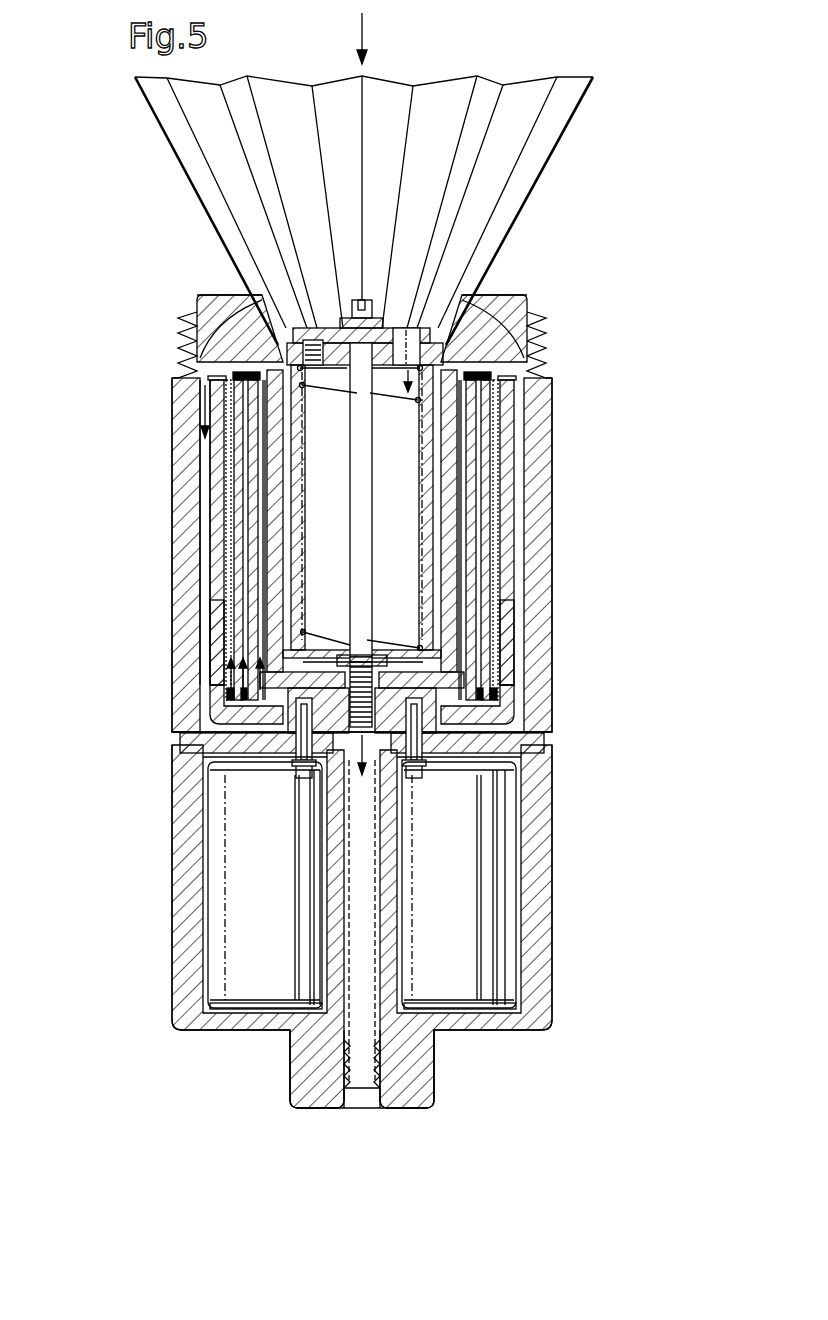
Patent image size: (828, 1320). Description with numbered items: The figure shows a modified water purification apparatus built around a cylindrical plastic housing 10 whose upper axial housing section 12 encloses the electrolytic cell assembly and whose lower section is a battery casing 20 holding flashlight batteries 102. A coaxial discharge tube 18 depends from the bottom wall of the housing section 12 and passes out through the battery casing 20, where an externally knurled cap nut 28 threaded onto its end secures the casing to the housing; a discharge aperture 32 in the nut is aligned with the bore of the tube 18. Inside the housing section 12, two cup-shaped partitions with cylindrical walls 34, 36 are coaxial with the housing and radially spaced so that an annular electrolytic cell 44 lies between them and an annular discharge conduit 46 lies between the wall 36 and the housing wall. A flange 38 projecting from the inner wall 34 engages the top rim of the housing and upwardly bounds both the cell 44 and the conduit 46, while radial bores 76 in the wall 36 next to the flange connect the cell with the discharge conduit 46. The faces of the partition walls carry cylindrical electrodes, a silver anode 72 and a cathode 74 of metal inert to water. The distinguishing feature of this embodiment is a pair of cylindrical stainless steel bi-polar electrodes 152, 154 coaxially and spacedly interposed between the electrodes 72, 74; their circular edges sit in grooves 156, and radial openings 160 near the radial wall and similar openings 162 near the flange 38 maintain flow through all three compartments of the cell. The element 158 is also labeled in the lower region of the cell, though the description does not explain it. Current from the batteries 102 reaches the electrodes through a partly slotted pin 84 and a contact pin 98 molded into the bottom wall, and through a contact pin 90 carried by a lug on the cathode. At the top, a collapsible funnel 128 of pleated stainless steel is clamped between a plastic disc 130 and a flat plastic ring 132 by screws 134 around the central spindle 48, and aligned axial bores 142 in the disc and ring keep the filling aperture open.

The housing 10 is at (142, 200).
The upper axial housing section 12 is at (536, 472).
The discharge tube 18 is at (392, 869).
The battery casing 20 is at (548, 827).
The cap nut 28 is at (436, 1076).
The discharge aperture 32 is at (372, 1100).
The radially inner partition wall 34 is at (452, 513).
The partition wall 36 is at (505, 421).
The flange 38 is at (512, 298).
The annular electrolytic cell 44 is at (462, 641).
The annular discharge conduit 46 is at (519, 527).
The spindle 48 is at (369, 516).
The silver anode 72 is at (270, 519).
The cathode 74 is at (229, 459).
The radial bores 76 is at (206, 402).
The partly slotted pin 84 is at (304, 780).
The contact pin 90 is at (402, 646).
The contact pin 98 is at (414, 780).
The flashlight batteries 102 is at (218, 901).
The collapsible funnel 128 is at (530, 186).
The plastic disc 130 is at (294, 407).
The flat plastic ring 132 is at (420, 326).
The screws 134 is at (306, 328).
The axial bores 142 is at (388, 322).
The bi-polar electrode 152 is at (255, 609).
The bi-polar electrode 154 is at (241, 579).
The grooves 156 is at (230, 360).
The seal 158 is at (212, 723).
The radial openings 160 is at (240, 686).
The radial openings 162 is at (240, 372).